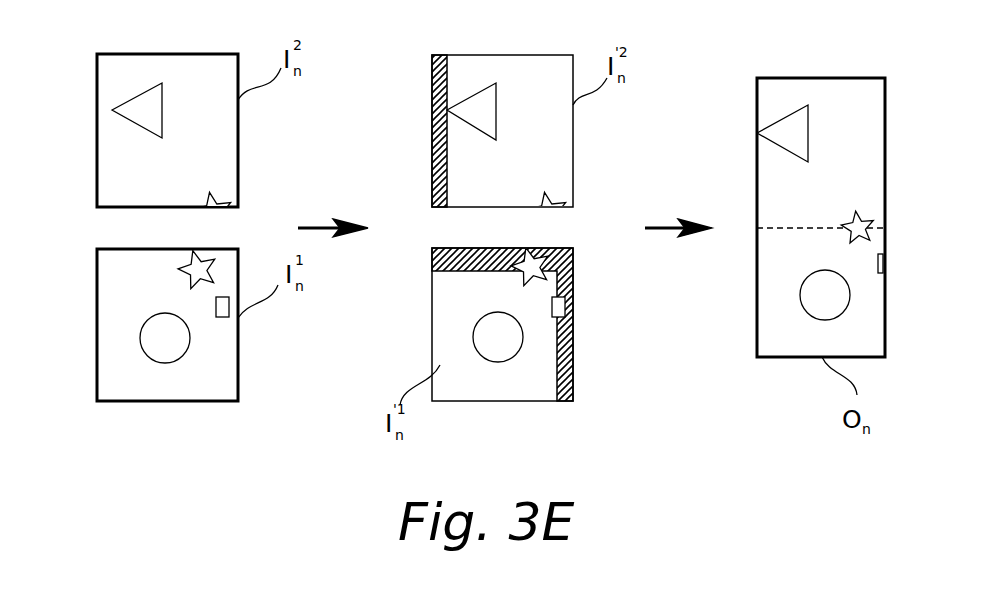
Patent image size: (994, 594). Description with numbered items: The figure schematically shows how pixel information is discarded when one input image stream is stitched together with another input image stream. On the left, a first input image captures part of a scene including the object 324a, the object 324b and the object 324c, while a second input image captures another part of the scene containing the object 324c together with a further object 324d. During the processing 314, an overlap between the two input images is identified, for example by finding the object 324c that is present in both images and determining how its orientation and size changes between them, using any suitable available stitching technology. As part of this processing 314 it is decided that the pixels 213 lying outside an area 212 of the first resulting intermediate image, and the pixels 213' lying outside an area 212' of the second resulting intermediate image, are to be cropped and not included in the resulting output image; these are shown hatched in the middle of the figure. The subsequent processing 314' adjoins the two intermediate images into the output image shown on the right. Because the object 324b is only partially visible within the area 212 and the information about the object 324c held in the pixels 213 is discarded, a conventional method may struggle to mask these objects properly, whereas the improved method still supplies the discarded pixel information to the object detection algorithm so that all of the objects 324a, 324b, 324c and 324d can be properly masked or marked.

The area of the intermediate image 212 is at (627, 241).
The area of the second intermediate image 212' is at (532, 105).
The pixels outside the area 213 is at (534, 348).
The pixels outside the second area 213' is at (406, 131).
The processing 314 is at (333, 265).
The processing 314' is at (680, 265).
The object 324a is at (165, 338).
The object 324b is at (222, 318).
The object 324c is at (215, 195).
The object 324d is at (130, 110).